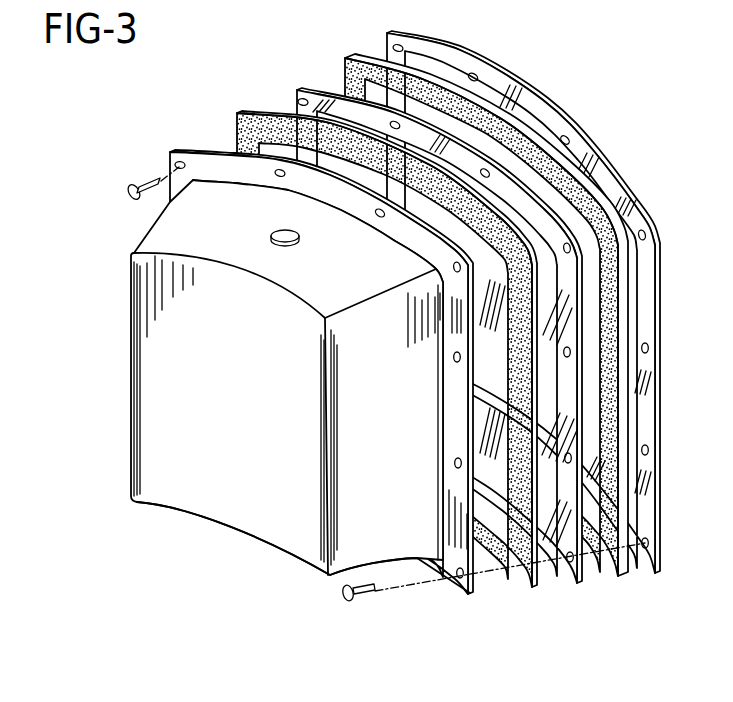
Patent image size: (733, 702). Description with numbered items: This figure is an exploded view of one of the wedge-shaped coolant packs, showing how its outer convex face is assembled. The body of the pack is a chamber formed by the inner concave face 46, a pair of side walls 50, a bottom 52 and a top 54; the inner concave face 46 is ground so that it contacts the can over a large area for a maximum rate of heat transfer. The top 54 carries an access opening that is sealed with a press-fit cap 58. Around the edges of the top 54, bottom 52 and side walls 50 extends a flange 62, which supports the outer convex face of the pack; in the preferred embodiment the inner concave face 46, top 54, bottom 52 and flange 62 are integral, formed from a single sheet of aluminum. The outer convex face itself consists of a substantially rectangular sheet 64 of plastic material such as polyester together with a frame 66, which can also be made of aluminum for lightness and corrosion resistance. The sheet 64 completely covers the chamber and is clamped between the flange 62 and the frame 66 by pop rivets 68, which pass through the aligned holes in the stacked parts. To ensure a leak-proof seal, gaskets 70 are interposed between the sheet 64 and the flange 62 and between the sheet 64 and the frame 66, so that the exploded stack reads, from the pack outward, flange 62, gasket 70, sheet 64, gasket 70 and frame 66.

The inner concave face 46 is at (239, 416).
The side walls 50 is at (403, 491).
The bottom 52 is at (296, 531).
The top 54 is at (173, 227).
The press-fit cap 58 is at (298, 233).
The flange 62 is at (170, 163).
The sheet 64 is at (297, 100).
The frame 66 is at (410, 34).
The pop rivets 68 is at (128, 190).
The gaskets 70 is at (342, 73).